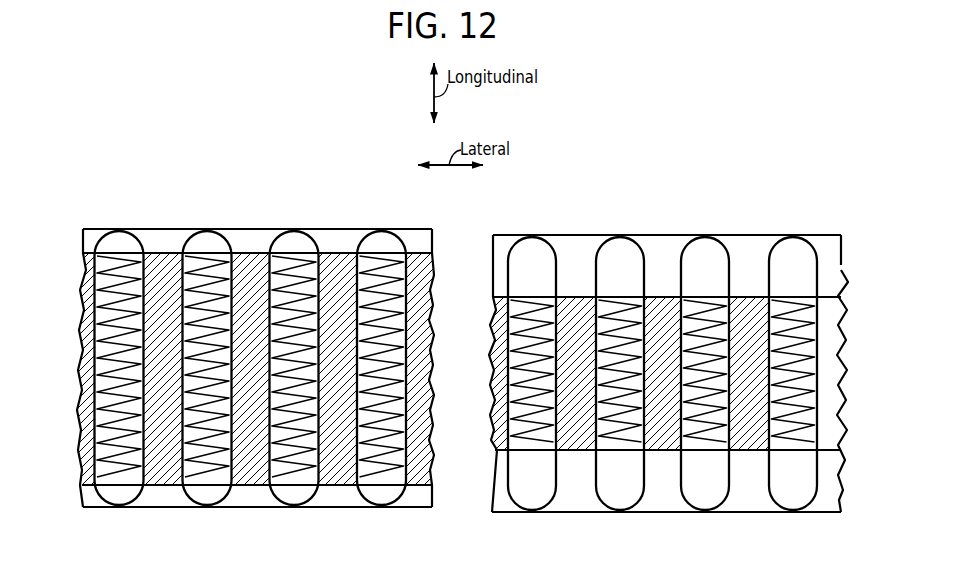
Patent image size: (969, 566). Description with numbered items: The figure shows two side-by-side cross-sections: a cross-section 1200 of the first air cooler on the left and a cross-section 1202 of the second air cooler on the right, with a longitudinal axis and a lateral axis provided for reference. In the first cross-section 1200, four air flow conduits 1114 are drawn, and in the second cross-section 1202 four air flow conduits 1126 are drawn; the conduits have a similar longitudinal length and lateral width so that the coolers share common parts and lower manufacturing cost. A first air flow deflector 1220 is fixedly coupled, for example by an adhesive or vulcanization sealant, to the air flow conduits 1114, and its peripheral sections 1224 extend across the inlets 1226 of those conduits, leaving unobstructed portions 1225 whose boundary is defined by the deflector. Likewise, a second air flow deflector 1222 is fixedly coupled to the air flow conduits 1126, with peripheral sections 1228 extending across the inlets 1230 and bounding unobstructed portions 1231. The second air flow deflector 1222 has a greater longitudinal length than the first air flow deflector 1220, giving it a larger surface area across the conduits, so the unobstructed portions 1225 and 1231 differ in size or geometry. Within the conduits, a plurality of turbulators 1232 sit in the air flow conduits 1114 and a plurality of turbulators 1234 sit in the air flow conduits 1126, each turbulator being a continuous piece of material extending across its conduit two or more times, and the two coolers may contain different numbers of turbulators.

The cross-section of the first air cooler 1200 is at (432, 208).
The cross-section of the second air cooler 1202 is at (848, 208).
The first air flow deflector 1220 is at (90, 236).
The second air flow deflector 1222 is at (508, 238).
The peripheral sections 1224 is at (85, 245).
The unobstructed portions 1225 is at (84, 369).
The inlets 1226 is at (143, 228).
The peripheral sections 1228 is at (501, 250).
The inlets 1230 is at (556, 228).
The unobstructed portions 1231 is at (496, 372).
The turbulators 1232 is at (130, 404).
The turbulators 1234 is at (543, 392).
The air flow conduits 1114 is at (120, 511).
The air flow conduits 1126 is at (531, 526).